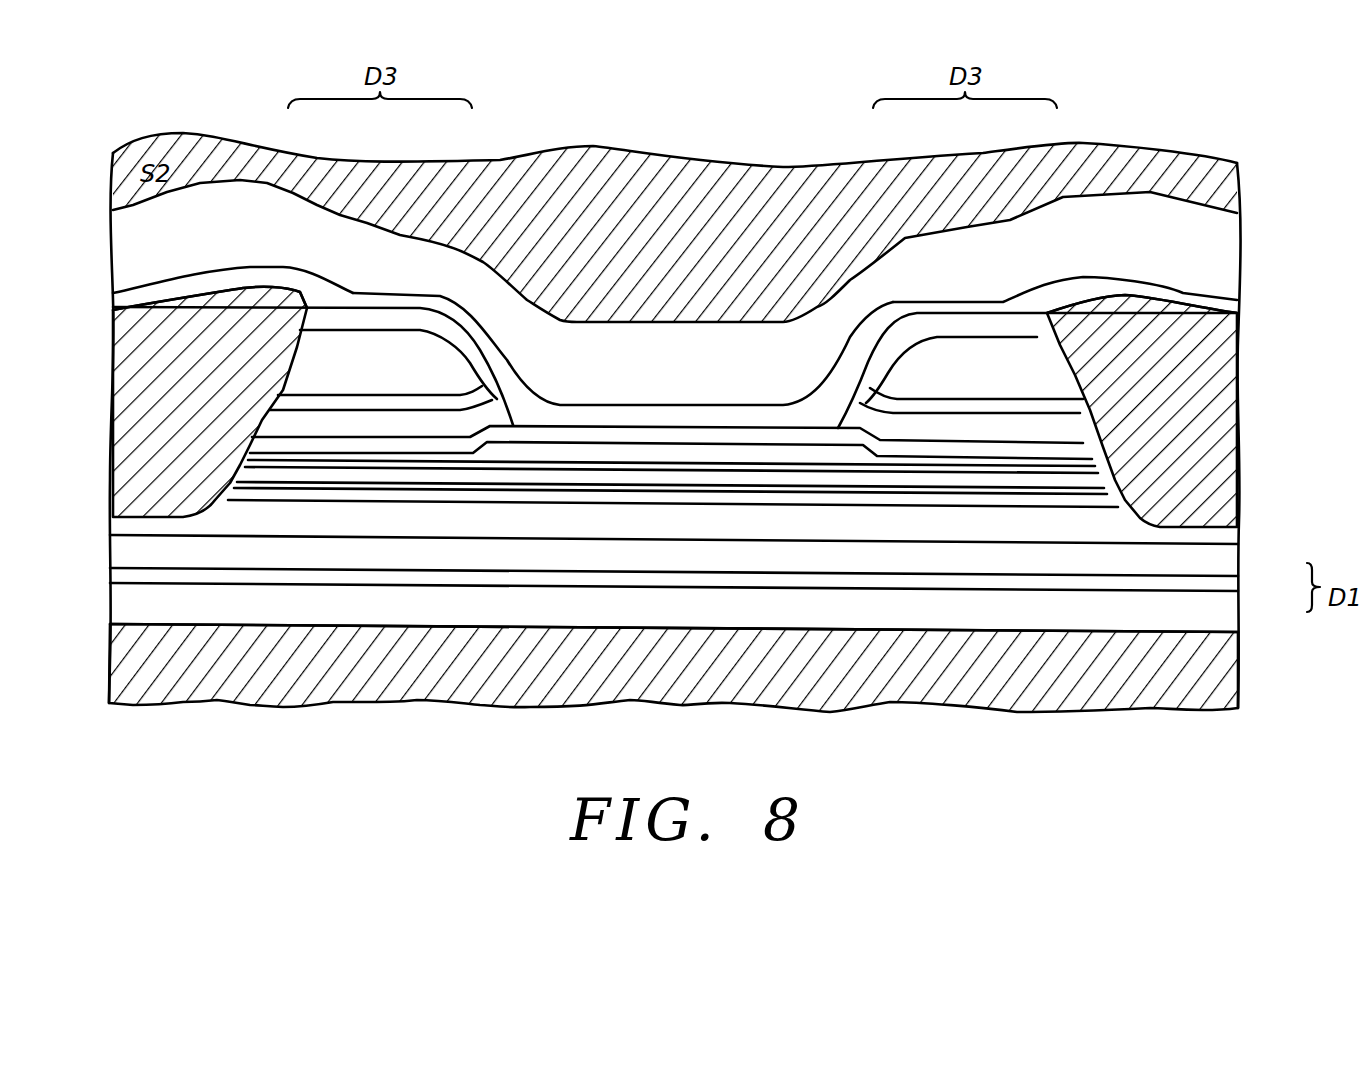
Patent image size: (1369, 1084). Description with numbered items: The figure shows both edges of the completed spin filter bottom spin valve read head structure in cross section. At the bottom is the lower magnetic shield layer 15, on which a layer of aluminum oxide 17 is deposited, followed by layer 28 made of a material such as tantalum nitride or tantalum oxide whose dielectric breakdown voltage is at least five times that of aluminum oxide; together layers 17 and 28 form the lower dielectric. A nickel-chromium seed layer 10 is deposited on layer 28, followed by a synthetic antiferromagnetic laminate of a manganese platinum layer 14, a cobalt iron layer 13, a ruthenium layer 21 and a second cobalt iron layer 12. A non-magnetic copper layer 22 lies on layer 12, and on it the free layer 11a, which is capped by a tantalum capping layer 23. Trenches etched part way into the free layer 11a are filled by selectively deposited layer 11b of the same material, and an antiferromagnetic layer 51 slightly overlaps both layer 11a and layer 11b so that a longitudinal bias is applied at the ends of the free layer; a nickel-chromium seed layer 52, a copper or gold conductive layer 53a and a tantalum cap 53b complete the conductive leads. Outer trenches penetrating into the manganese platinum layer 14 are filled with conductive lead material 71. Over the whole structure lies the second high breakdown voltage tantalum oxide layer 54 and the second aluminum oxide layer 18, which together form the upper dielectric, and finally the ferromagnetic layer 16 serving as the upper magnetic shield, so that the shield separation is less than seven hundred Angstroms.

The ferromagnetic layer 16 is at (133, 181).
The second aluminum oxide layer 18 is at (417, 270).
The conductive lead material 71 is at (113, 292).
The second high breakdown voltage layer 54 is at (353, 292).
The tantalum layer 53b is at (310, 321).
The conductive layer 53a is at (297, 364).
The seed layer 52 is at (283, 399).
The layer of antiferromagnetic material 51 is at (263, 418).
The selectively deposited layer 11b is at (267, 440).
The free layer 11a is at (613, 452).
The tantalum capping layer 23 is at (738, 420).
The layer of non-magnetic material 22 is at (253, 455).
The cobalt iron layer 12 is at (250, 468).
The ruthenium layer 21 is at (240, 485).
The cobalt iron layer 13 is at (230, 498).
The manganese platinum layer 14 is at (122, 524).
The seed layer 10 is at (122, 547).
The high breakdown voltage layer 28 is at (122, 573).
The layer of aluminum oxide 17 is at (122, 599).
The lower magnetic shield layer 15 is at (122, 652).